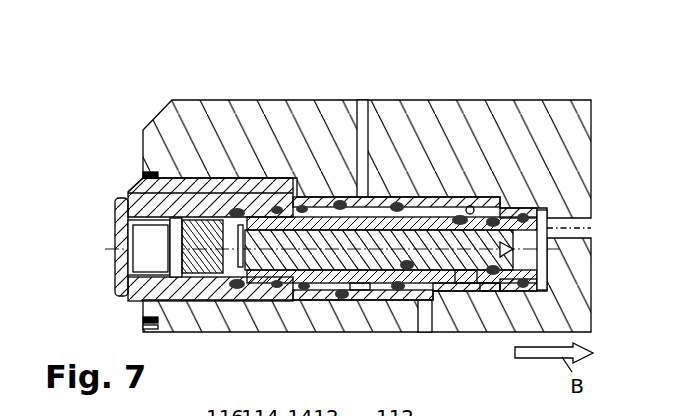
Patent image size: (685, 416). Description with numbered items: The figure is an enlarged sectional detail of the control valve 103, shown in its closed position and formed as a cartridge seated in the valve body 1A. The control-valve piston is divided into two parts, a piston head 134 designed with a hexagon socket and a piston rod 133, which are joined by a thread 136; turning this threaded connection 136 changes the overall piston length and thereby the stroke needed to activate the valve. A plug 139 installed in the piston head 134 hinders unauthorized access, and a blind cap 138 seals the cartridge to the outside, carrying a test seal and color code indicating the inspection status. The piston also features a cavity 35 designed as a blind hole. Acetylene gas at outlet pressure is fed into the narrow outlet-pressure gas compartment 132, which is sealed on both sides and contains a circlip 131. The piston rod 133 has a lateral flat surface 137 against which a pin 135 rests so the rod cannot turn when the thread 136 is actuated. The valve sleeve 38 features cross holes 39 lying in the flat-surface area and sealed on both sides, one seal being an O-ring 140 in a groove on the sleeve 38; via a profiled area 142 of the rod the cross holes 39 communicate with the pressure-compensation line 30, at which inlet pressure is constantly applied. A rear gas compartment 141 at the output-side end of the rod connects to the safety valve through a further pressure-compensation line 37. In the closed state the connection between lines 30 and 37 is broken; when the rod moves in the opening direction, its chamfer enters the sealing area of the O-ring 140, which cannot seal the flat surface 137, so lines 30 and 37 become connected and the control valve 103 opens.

The valve housing 1A is at (573, 325).
The control valve 103 is at (124, 175).
The plug 139 is at (182, 195).
The piston head 134 is at (220, 190).
The outlet-pressure gas compartment 132 is at (248, 200).
The piston rod 133 is at (325, 205).
The cavity 35 is at (352, 196).
The profiled area 142 is at (437, 205).
The flat surface 137 is at (445, 212).
The pin 135 is at (470, 212).
The rear gas compartment 141 is at (527, 237).
The pressure-compensation line 37 is at (591, 218).
The blind cap 138 is at (116, 258).
The thread 136 is at (232, 296).
The circlip 131 is at (254, 300).
The valve sleeve 38 is at (362, 290).
The pressure-compensation line 30 is at (422, 315).
The cross holes 39 is at (466, 283).
The O-ring 140 is at (490, 295).